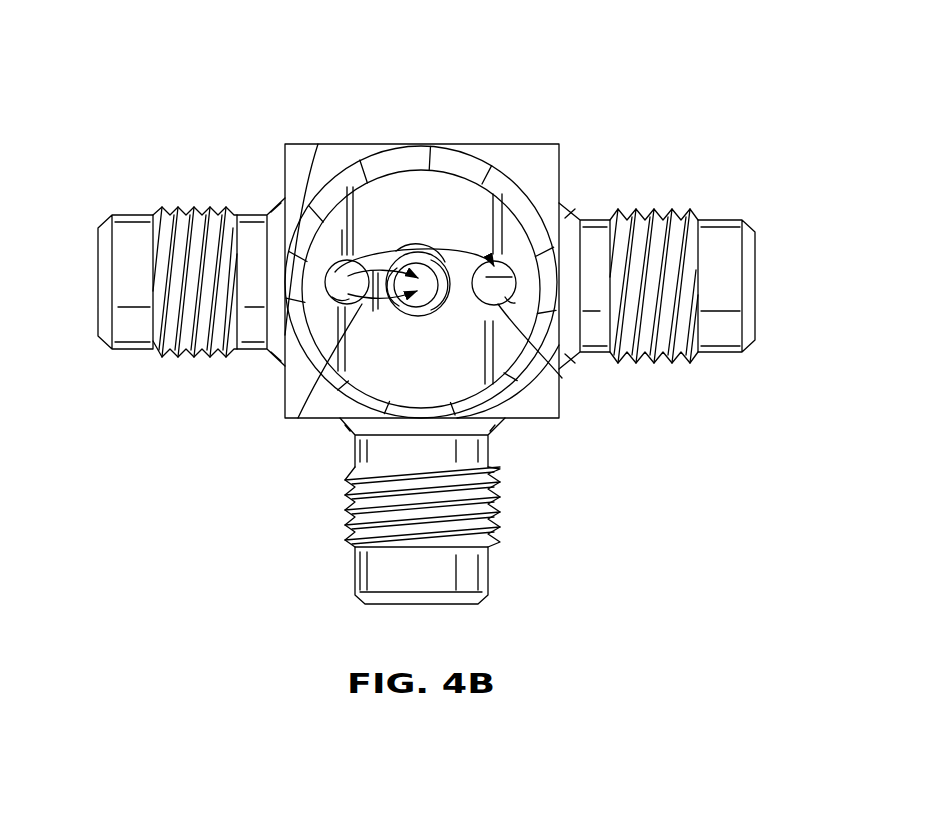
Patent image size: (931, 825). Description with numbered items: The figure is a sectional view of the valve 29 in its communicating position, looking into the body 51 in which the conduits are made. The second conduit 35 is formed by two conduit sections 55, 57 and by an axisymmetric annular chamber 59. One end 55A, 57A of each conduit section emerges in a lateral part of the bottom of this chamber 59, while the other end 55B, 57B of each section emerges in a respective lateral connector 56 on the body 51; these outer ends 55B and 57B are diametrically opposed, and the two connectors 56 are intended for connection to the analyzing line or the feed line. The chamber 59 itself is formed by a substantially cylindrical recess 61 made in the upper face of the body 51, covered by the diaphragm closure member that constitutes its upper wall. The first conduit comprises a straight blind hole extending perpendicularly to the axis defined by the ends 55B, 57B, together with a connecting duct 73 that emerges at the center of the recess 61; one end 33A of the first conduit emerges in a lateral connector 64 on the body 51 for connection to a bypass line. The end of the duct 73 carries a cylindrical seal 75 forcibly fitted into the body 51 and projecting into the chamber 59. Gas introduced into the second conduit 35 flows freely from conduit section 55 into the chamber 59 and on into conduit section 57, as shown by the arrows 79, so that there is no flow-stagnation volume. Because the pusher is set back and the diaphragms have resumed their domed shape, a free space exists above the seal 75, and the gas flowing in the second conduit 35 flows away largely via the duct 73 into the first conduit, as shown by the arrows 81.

The valve 29 is at (642, 76).
The second conduit 35 is at (370, 224).
The body 51 is at (552, 170).
The conduit section 55 is at (347, 272).
The end of conduit section 55A is at (352, 350).
The end of conduit section 55B is at (93, 282).
The lateral connector 56 is at (165, 207).
The conduit section 57 is at (512, 268).
The end of conduit section 57A is at (557, 379).
The end of conduit section 57B is at (762, 286).
The annular chamber 59 is at (298, 418).
The cylindrical recess 61 is at (505, 203).
The lateral connector 64 is at (480, 573).
The connecting duct 73 is at (428, 294).
The cylindrical seal 75 is at (399, 306).
The arrows 79 is at (396, 251).
The arrows 81 is at (374, 308).
The end of first conduit 33A is at (425, 612).